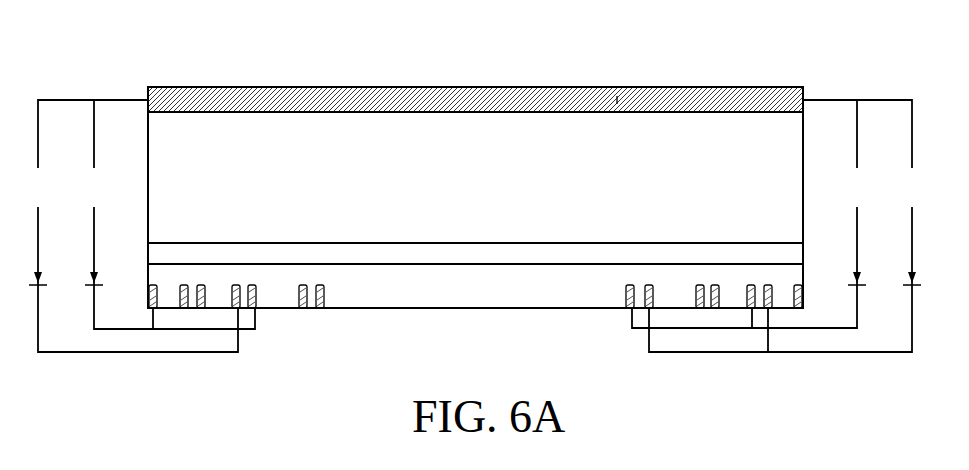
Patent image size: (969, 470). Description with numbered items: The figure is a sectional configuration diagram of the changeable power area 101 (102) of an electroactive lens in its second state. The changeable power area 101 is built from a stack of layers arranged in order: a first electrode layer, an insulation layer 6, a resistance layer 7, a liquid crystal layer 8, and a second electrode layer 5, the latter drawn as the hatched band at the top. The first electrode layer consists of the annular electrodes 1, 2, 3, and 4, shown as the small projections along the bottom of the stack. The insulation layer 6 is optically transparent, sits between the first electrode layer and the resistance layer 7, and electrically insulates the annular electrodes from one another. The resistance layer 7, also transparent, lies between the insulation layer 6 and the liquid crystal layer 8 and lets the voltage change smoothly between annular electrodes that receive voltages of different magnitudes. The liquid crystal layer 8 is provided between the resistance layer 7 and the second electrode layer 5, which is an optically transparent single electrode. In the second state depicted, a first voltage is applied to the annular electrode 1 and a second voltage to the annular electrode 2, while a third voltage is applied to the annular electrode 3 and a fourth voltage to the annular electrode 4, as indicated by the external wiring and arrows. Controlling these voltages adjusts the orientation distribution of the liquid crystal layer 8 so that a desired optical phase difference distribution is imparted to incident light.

The changeable power area 101 is at (475, 178).
The changeable power area 102 is at (475, 190).
The annular electrode 1 is at (236, 285).
The annular electrode 2 is at (154, 285).
The annular electrode 3 is at (184, 285).
The annular electrode 4 is at (201, 285).
The second electrode layer 5 is at (528, 87).
The insulation layer 6 is at (563, 264).
The resistance layer 7 is at (648, 243).
The liquid crystal layer 8 is at (617, 100).